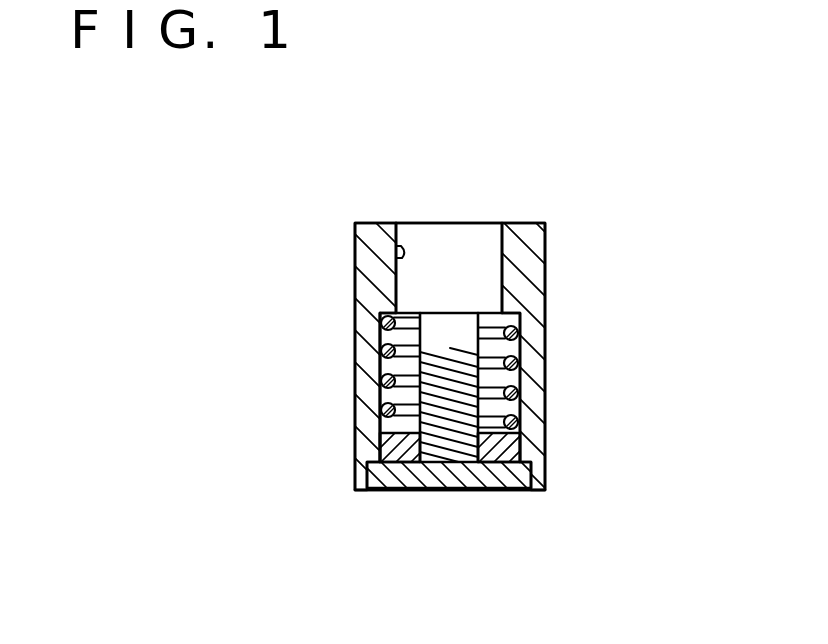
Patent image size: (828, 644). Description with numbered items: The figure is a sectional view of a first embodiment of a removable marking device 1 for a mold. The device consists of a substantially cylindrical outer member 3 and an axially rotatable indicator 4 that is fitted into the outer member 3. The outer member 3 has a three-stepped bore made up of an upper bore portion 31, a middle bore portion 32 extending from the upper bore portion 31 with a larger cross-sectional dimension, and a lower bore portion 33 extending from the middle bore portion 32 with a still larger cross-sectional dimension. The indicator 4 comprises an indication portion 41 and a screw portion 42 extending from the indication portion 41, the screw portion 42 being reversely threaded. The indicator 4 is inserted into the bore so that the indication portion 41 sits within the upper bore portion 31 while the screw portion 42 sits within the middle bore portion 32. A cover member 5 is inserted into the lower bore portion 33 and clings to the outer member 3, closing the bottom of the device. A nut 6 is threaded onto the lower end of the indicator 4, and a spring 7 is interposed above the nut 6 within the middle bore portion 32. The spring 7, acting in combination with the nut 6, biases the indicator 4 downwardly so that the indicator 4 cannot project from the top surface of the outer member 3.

The removable marking device 1 is at (497, 177).
The outer member 3 is at (355, 297).
The upper bore portion 31 is at (396, 257).
The middle bore portion 32 is at (380, 398).
The lower bore portion 33 is at (378, 468).
The indicator 4 is at (655, 255).
The indication portion 41 is at (485, 275).
The screw portion 42 is at (477, 357).
The cover member 5 is at (531, 478).
The nut 6 is at (520, 460).
The spring 7 is at (518, 393).